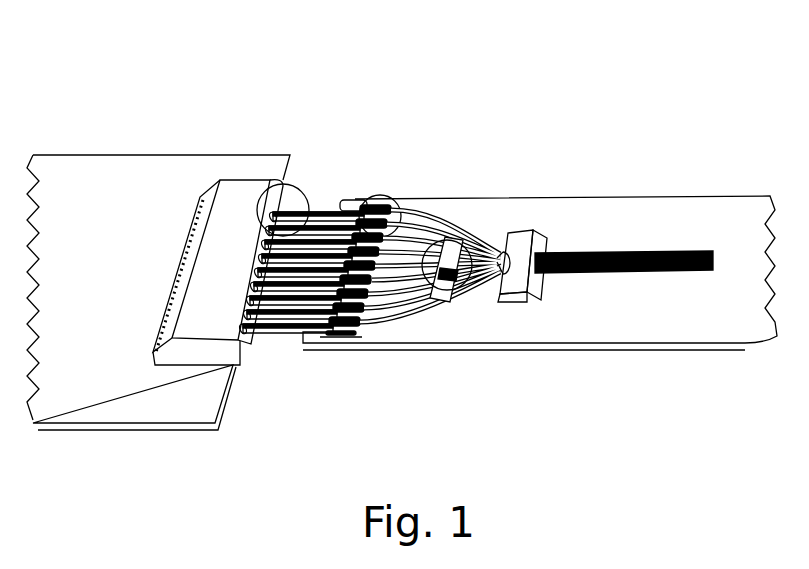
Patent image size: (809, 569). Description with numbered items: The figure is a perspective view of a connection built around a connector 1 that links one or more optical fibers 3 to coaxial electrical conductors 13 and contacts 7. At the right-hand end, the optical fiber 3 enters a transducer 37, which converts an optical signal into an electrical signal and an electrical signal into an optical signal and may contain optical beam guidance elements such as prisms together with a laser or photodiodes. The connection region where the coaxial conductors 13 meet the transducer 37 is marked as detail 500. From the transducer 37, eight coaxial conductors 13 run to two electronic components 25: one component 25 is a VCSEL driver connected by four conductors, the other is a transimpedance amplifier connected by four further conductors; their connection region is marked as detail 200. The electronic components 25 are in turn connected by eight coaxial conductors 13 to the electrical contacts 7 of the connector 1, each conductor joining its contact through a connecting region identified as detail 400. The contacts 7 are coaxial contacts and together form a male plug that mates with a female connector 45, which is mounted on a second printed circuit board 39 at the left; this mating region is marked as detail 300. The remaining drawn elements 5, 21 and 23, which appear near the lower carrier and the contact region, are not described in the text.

The connector 1 is at (419, 88).
The optical fiber 3 is at (649, 248).
The second circuit board 5 is at (638, 328).
The electrical contacts 7 is at (272, 340).
The coaxial electrical conductors 13 is at (388, 306).
The crimp contacts 21 is at (392, 212).
The bundle region 23 is at (452, 242).
The electronic component 25 is at (443, 292).
The transducer 37 is at (527, 289).
The second printed circuit board 39 is at (131, 254).
The female connector 45 is at (241, 256).
The detail of the connection region of the coaxial conductors to the electrical comp 200 is at (481, 322).
The detail with the male contacts and the female connector 300 is at (252, 199).
The detail of the connecting region 400 is at (325, 223).
The detail of the connection region of the coaxial conductor to the transducer 500 is at (501, 247).